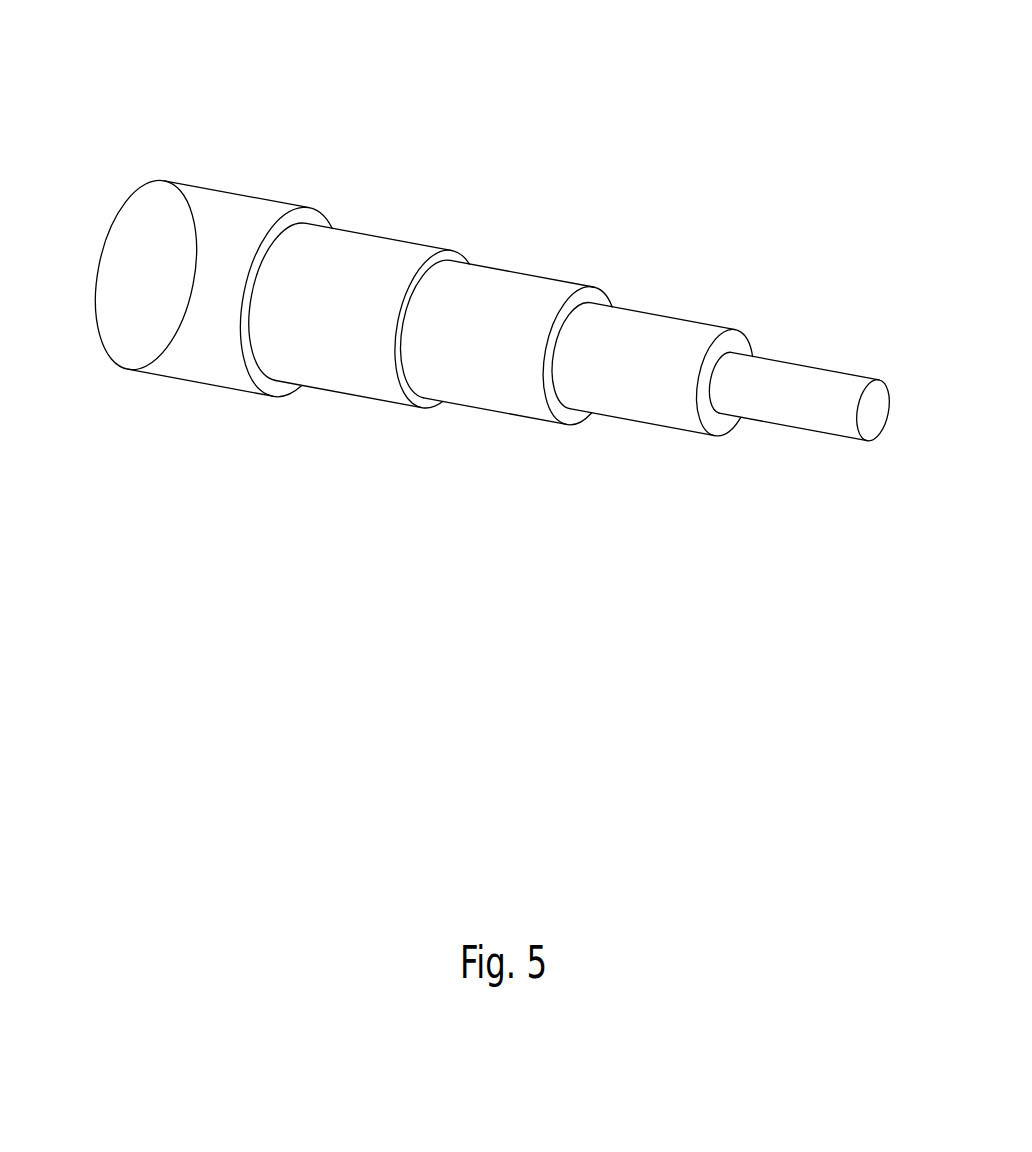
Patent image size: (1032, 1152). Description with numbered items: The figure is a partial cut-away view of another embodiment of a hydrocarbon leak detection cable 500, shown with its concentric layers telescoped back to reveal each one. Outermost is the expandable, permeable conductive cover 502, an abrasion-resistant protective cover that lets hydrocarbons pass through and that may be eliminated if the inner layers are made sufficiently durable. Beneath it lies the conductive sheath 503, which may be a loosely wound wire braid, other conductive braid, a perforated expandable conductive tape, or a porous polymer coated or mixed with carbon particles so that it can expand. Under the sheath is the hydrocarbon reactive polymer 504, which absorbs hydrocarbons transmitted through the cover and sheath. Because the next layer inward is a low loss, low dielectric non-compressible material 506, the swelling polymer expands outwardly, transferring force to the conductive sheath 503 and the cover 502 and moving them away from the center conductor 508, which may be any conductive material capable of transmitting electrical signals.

The hydrocarbon leak detection cable 500 is at (632, 116).
The expandable, permeable conductive cover 502 is at (177, 345).
The conductive sheath 503 is at (378, 260).
The hydrocarbon reactive polymer 504 is at (482, 397).
The low loss, low dielectric non-compressible material 506 is at (680, 337).
The center conductor 508 is at (795, 412).